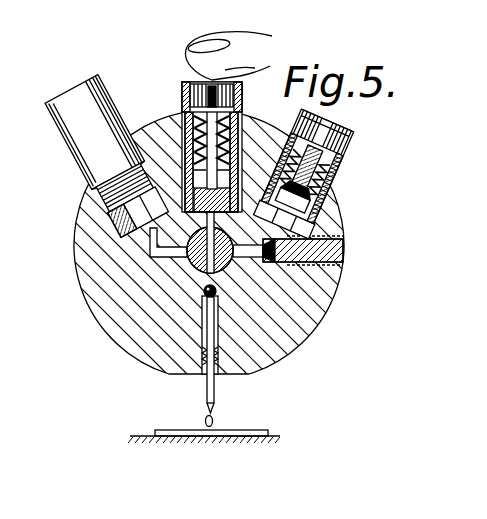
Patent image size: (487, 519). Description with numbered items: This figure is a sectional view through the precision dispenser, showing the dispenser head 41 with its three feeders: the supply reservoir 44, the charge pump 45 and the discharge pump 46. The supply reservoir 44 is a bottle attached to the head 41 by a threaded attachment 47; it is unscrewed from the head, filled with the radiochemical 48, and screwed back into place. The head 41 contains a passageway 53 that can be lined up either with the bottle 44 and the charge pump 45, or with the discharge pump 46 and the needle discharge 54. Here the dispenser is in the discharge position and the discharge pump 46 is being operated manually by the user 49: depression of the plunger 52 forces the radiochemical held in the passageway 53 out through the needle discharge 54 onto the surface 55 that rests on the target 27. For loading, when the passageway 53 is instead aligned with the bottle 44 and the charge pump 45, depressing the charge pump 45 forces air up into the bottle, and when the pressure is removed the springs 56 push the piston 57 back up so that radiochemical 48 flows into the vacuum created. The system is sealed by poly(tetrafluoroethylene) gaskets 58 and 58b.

The target 27 is at (232, 440).
The dispenser head 41 is at (158, 128).
The supply reservoir 44 is at (75, 143).
The charge pump 45 is at (346, 150).
The discharge pump 46 is at (184, 84).
The threaded attachment 47 is at (100, 212).
The radiochemical 48 is at (213, 422).
The user 49 is at (258, 52).
The plunger 52 is at (245, 120).
The passageway 53 is at (143, 327).
The needle discharge 54 is at (207, 393).
The surface 55 is at (165, 431).
The springs 56 is at (352, 163).
The piston 57 is at (326, 197).
The gasket 58 is at (80, 257).
The gasket 58b is at (310, 217).